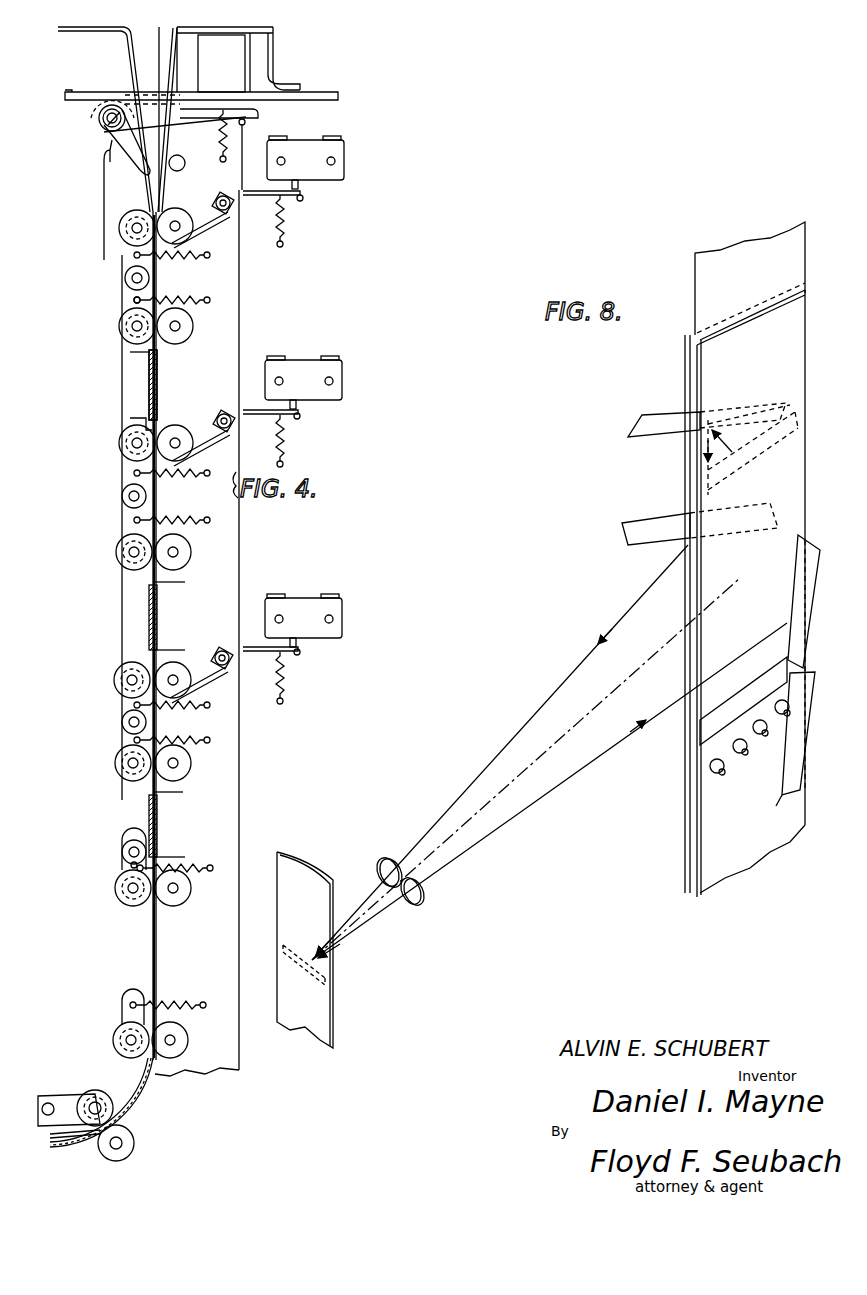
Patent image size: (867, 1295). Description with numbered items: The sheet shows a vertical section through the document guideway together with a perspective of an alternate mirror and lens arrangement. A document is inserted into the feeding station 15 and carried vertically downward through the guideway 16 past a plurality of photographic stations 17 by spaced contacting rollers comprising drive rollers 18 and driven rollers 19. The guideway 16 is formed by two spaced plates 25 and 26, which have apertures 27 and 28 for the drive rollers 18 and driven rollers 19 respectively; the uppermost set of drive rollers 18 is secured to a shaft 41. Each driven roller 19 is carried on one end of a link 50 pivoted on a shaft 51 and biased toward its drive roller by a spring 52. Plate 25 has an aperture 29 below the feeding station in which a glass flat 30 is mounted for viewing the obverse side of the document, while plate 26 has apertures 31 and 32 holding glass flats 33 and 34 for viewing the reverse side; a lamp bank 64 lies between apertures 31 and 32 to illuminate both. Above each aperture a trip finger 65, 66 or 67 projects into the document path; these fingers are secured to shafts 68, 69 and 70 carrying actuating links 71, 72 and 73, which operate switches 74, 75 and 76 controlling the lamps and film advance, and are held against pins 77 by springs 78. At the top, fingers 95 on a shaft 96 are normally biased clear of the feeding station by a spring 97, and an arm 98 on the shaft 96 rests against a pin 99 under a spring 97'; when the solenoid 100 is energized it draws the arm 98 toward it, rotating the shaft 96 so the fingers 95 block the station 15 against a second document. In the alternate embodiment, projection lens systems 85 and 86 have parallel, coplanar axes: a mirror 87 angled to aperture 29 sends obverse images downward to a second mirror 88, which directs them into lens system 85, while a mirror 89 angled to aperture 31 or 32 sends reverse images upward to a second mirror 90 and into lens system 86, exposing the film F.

In FIG. 4, the feeding station 15 is at (150, 50).
In FIG. 4, the guideway 16 is at (166, 300).
In FIG. 8, the guideway 16 is at (686, 785).
In FIG. 4, the photographic stations 17 is at (138, 373).
In FIG. 4, the drive rollers 18 is at (186, 248).
In FIG. 4, the driven rollers 19 is at (130, 262).
In FIG. 4, the plate 25 is at (126, 501).
In FIG. 8, the plate 25 is at (687, 605).
In FIG. 4, the plate 26 is at (158, 366).
In FIG. 8, the plate 26 is at (702, 838).
In FIG. 4, the apertures 27 is at (190, 322).
In FIG. 4, the apertures 28 is at (140, 568).
In FIG. 4, the aperture 29 is at (130, 417).
In FIG. 8, the aperture 29 is at (750, 480).
In FIG. 4, the glass flat 30 is at (148, 388).
In FIG. 4, the aperture 31 is at (172, 650).
In FIG. 8, the aperture 32 is at (742, 700).
In FIG. 4, the glass flat 33 is at (166, 592).
In FIG. 4, the glass flat 34 is at (166, 800).
In FIG. 4, the shaft 41 is at (178, 220).
In FIG. 4, the links 50 is at (130, 300).
In FIG. 4, the shafts 51 is at (123, 722).
In FIG. 4, the springs 52 is at (180, 515).
In FIG. 8, the lamp bank 64 is at (719, 774).
In FIG. 4, the trip finger 65 is at (208, 228).
In FIG. 4, the trip finger 66 is at (209, 430).
In FIG. 4, the trip finger 67 is at (192, 680).
In FIG. 4, the shaft 68 is at (223, 196).
In FIG. 4, the shaft 69 is at (224, 413).
In FIG. 4, the shaft 70 is at (222, 650).
In FIG. 4, the actuating link 71 is at (262, 198).
In FIG. 4, the actuating link 72 is at (262, 420).
In FIG. 4, the actuating link 73 is at (262, 655).
In FIG. 4, the switch 74 is at (344, 160).
In FIG. 4, the switch 75 is at (344, 390).
In FIG. 4, the switch 76 is at (344, 628).
In FIG. 4, the pins 77 is at (304, 198).
In FIG. 4, the springs 78 is at (290, 228).
In FIG. 8, the projection lens system 85 is at (388, 857).
In FIG. 8, the projection lens system 86 is at (413, 906).
In FIG. 8, the mirror 87 is at (660, 414).
In FIG. 8, the second mirror 88 is at (631, 538).
In FIG. 8, the mirror 89 is at (784, 800).
In FIG. 8, the second mirror 90 is at (797, 610).
In FIG. 4, the fingers 95 is at (126, 162).
In FIG. 4, the shaft 96 is at (100, 118).
In FIG. 4, the spring 97 is at (82, 198).
In FIG. 4, the spring 97' is at (198, 140).
In FIG. 4, the arm 98 is at (210, 124).
In FIG. 4, the pin 99 is at (246, 122).
In FIG. 4, the solenoid 100 is at (238, 59).
In FIG. 8, the film F is at (336, 1012).